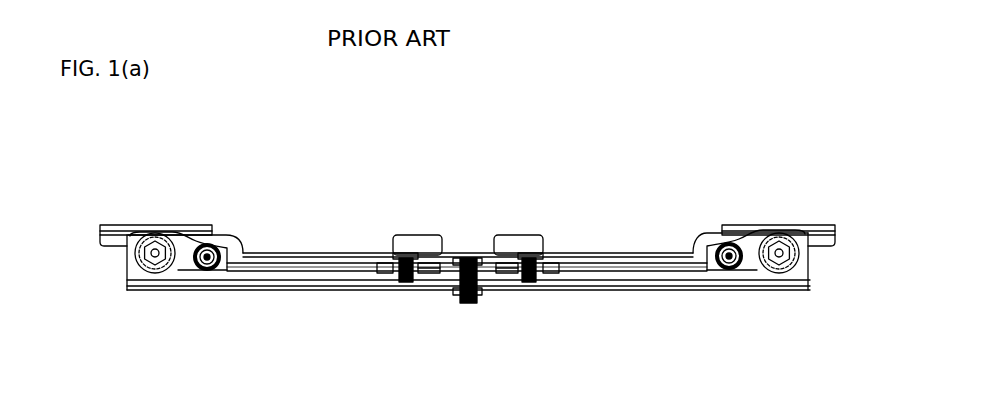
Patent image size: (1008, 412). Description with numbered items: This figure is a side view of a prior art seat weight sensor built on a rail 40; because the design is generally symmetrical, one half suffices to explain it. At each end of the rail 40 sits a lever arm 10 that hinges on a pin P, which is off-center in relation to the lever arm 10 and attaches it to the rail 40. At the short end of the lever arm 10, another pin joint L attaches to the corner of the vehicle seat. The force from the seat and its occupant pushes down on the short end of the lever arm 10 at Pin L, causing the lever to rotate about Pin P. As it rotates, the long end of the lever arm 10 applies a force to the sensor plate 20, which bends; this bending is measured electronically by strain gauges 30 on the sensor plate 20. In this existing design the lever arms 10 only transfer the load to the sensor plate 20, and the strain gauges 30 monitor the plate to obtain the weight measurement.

The lever arm 10 is at (183, 227).
The sensor plate 20 is at (468, 258).
The strain gauge 30 is at (397, 237).
The rail 40 is at (580, 282).
The pin joint L Pin L is at (136, 253).
The pin P Pin P is at (205, 265).